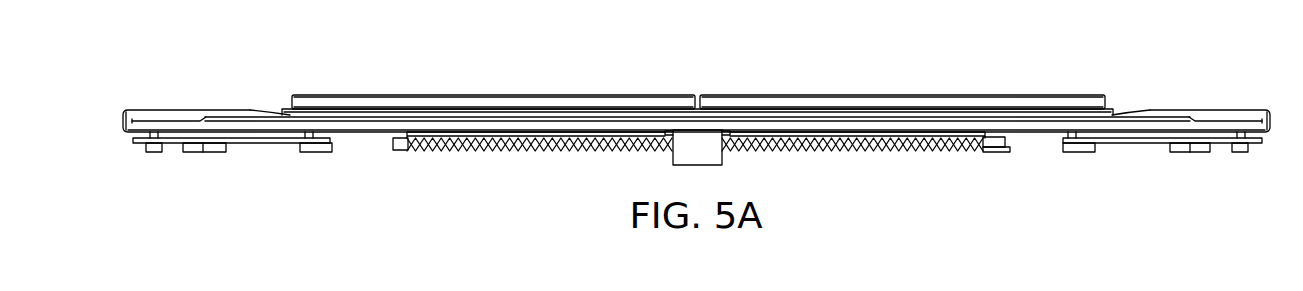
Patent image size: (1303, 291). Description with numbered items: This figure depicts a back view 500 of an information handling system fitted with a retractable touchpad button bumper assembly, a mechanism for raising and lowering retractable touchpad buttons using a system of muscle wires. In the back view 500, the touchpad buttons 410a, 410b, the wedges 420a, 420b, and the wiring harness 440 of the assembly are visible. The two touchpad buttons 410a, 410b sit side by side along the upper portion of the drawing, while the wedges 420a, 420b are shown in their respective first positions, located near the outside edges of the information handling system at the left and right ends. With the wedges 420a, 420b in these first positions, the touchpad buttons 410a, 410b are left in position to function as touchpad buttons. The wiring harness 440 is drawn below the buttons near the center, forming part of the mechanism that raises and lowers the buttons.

The back view 500 is at (728, 68).
The touchpad button 410a is at (492, 93).
The touchpad button 410b is at (905, 97).
The wedge 420a is at (187, 121).
The wedge 420b is at (1210, 120).
The wiring harness 440 is at (680, 155).